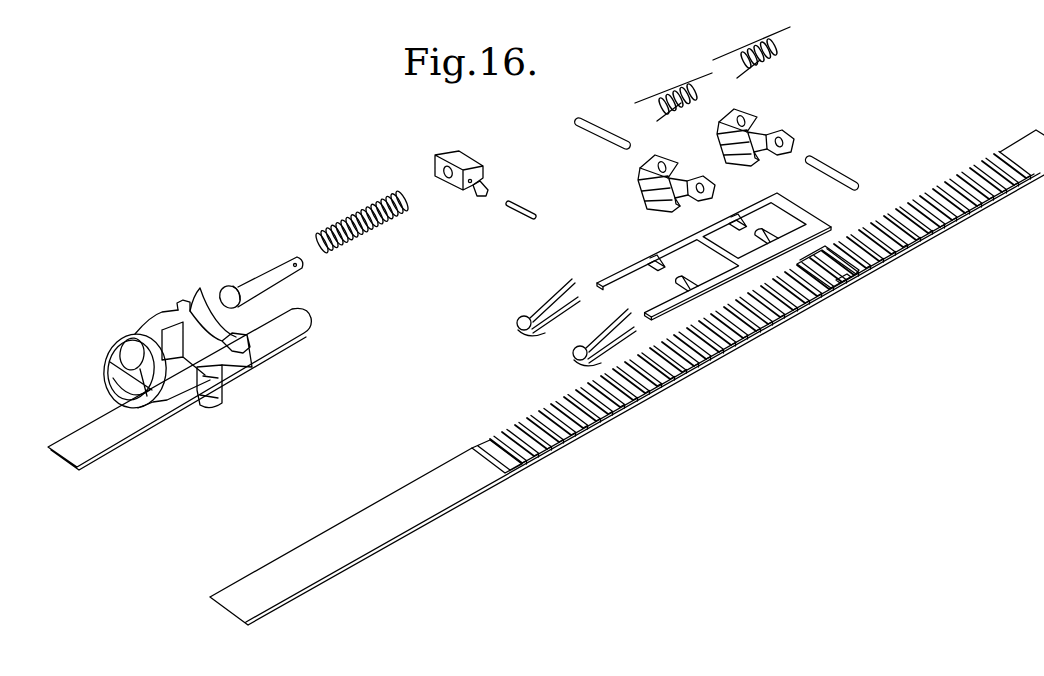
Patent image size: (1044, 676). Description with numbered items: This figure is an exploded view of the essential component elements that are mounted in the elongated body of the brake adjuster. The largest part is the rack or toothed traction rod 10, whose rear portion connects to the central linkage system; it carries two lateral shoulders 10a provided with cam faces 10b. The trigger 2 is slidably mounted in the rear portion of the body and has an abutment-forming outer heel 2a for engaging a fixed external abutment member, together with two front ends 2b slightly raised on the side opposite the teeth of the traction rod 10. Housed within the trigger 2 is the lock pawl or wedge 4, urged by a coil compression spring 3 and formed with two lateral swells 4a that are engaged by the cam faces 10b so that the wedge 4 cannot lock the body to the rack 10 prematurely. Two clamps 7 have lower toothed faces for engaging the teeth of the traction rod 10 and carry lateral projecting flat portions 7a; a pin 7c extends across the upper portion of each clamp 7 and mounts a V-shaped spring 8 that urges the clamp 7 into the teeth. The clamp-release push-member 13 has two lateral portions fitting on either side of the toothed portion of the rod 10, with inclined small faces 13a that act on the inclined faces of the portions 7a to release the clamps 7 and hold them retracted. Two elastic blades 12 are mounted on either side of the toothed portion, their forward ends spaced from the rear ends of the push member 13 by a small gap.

The trigger 2 is at (148, 327).
The outer heel 2a is at (222, 398).
The front ends 2b is at (227, 333).
The coil compression spring 3 is at (368, 227).
The lock pawl or wedge 4 is at (273, 273).
The lateral swells 4a is at (488, 192).
The clamps 7 is at (638, 188).
The projecting flat portions 7a is at (678, 204).
The pin 7c is at (597, 124).
The V-shaped spring 8 is at (670, 85).
The rack or toothed traction rod 10 is at (698, 372).
The lateral shoulders 10a is at (845, 292).
The cam faces 10b is at (852, 278).
The elastic blades 12 is at (597, 363).
The clamp-release push-member 13 is at (698, 242).
The small faces 13a is at (688, 280).